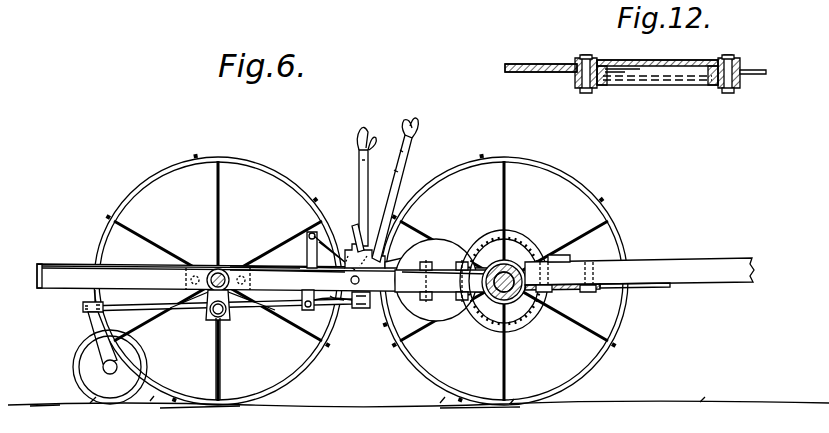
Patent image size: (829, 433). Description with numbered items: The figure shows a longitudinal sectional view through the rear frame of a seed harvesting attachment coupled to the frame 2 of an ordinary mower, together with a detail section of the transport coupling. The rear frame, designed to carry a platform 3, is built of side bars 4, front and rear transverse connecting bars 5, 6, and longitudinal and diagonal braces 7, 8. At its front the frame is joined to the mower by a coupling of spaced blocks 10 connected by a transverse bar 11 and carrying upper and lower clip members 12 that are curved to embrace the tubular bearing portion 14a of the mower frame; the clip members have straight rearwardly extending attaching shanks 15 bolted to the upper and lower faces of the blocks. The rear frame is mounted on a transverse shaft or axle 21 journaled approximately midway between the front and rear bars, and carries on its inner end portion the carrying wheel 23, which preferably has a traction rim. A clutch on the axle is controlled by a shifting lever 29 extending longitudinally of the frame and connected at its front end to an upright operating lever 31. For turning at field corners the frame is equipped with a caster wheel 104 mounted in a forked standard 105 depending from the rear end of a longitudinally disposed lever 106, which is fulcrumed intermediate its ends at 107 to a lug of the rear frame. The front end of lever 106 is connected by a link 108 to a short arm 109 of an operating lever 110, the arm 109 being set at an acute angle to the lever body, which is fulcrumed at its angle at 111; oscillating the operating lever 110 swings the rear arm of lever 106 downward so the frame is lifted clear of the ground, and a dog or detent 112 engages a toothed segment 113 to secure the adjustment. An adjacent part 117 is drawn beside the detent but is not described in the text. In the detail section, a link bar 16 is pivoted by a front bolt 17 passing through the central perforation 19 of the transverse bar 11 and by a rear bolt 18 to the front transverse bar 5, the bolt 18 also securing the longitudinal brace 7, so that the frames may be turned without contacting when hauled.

In FIG. 6, the mower frame 2 is at (622, 262).
In FIG. 6, the platform 3 is at (392, 300).
In FIG. 6, the side bars 4 is at (70, 286).
In FIG. 12, the front transverse connecting bar 5 is at (541, 80).
In FIG. 6, the rear transverse connecting bar 6 is at (37, 278).
In FIG. 12, the longitudinal brace 7 is at (528, 64).
In FIG. 6, the diagonal brace 8 is at (155, 268).
In FIG. 6, the coupling blocks 10 is at (417, 287).
In FIG. 6, the transverse bar 11 is at (436, 256).
In FIG. 12, the transverse bar 11 is at (706, 76).
In FIG. 6, the clip members 12 is at (504, 281).
In FIG. 6, the tubular bearing portion 14a is at (500, 304).
In FIG. 6, the attaching shanks 15 is at (470, 258).
In FIG. 12, the link bar 16 is at (602, 86).
In FIG. 12, the front bolt 17 is at (736, 58).
In FIG. 12, the rear bolt 18 is at (586, 52).
In FIG. 12, the central perforation 19 is at (766, 72).
In FIG. 6, the shaft or axle 21 is at (222, 275).
In FIG. 6, the carrying wheel 23 is at (185, 176).
In FIG. 6, the shifting lever 29 is at (358, 308).
In FIG. 6, the upright operating lever 31 is at (359, 148).
In FIG. 6, the caster wheel 104 is at (84, 371).
In FIG. 6, the forked standard 105 is at (100, 336).
In FIG. 6, the longitudinally disposed lever 106 is at (180, 310).
In FIG. 6, the fulcrum 107 is at (224, 316).
In FIG. 6, the link 108 is at (310, 266).
In FIG. 6, the short arm 109 is at (311, 232).
In FIG. 6, the operating lever 110 is at (398, 174).
In FIG. 6, the fulcrum 111 is at (380, 308).
In FIG. 6, the dog or detent 112 is at (356, 228).
In FIG. 6, the toothed segment 113 is at (398, 252).
In FIG. 6, the pawl 117 is at (355, 226).